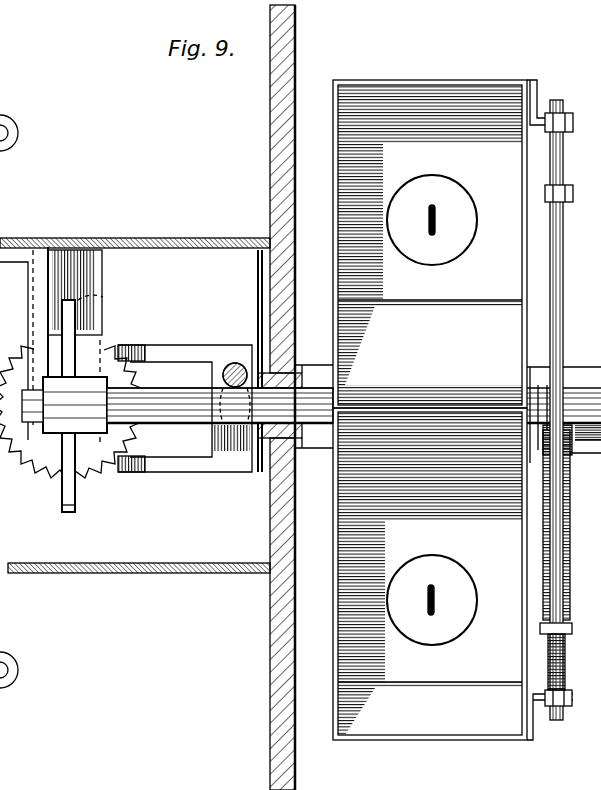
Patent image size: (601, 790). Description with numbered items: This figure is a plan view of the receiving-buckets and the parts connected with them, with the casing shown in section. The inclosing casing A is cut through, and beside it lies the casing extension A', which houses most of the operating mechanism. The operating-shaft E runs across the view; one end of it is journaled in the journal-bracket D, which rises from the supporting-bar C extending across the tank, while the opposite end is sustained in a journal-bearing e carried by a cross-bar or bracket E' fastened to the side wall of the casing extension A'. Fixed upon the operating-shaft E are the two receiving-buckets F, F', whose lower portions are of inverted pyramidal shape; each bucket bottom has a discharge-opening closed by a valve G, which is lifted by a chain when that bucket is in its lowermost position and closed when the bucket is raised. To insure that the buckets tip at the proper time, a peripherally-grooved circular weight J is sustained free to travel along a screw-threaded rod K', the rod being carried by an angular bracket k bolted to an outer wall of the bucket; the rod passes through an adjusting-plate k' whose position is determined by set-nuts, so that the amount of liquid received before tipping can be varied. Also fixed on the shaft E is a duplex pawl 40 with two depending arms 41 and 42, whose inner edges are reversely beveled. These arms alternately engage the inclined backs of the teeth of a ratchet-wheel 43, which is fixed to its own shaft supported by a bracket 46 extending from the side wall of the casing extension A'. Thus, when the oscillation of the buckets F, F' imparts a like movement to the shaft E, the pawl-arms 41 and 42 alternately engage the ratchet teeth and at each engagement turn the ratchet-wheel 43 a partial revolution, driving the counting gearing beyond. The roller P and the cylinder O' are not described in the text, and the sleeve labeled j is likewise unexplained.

The inclosing casing A is at (151, 397).
The casing extension A' is at (135, 229).
The cross-bar or bracket E' is at (16, 345).
The bracket 46 is at (75, 347).
The pawl-arm 42 is at (80, 301).
The duplex pawl 40 is at (70, 340).
The ratchet-wheel 43 is at (71, 413).
The pawl-arm 41 is at (76, 507).
The journal-bearing e is at (37, 425).
The operating-shaft E is at (220, 451).
The roller P is at (205, 348).
The cylinder O' is at (236, 350).
The receiving-bucket F is at (430, 244).
The receiving-bucket F' is at (430, 574).
The valve G is at (432, 410).
The supporting-bar C is at (578, 376).
The journal-bracket D is at (564, 405).
The circular weight J is at (572, 495).
The rod K' is at (571, 410).
The angular bracket k is at (560, 408).
The nut j is at (572, 627).
The adjusting-plate k' is at (574, 662).